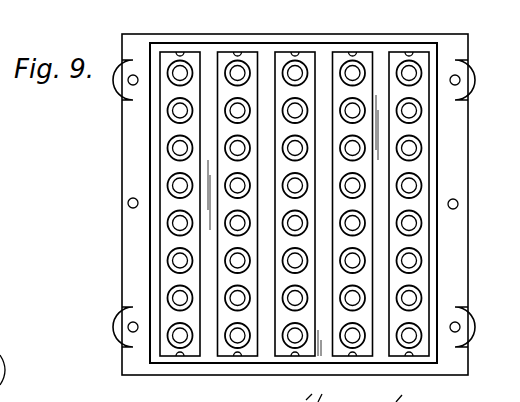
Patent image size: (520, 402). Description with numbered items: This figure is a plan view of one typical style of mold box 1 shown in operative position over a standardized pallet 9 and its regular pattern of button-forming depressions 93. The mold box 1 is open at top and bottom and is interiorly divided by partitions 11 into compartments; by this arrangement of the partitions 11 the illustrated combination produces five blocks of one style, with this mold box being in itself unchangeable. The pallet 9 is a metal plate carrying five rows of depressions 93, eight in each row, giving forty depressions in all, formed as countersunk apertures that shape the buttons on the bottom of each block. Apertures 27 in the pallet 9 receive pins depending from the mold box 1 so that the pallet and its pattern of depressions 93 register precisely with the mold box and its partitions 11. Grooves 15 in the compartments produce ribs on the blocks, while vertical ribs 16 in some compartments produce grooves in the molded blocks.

The mold box 1 is at (440, 268).
The pallet 9 is at (462, 160).
The partitions 11 is at (262, 163).
The grooves 15 is at (223, 357).
The vertical ribs 16 is at (368, 52).
The apertures 27 is at (127, 203).
The depressions 93 is at (283, 222).